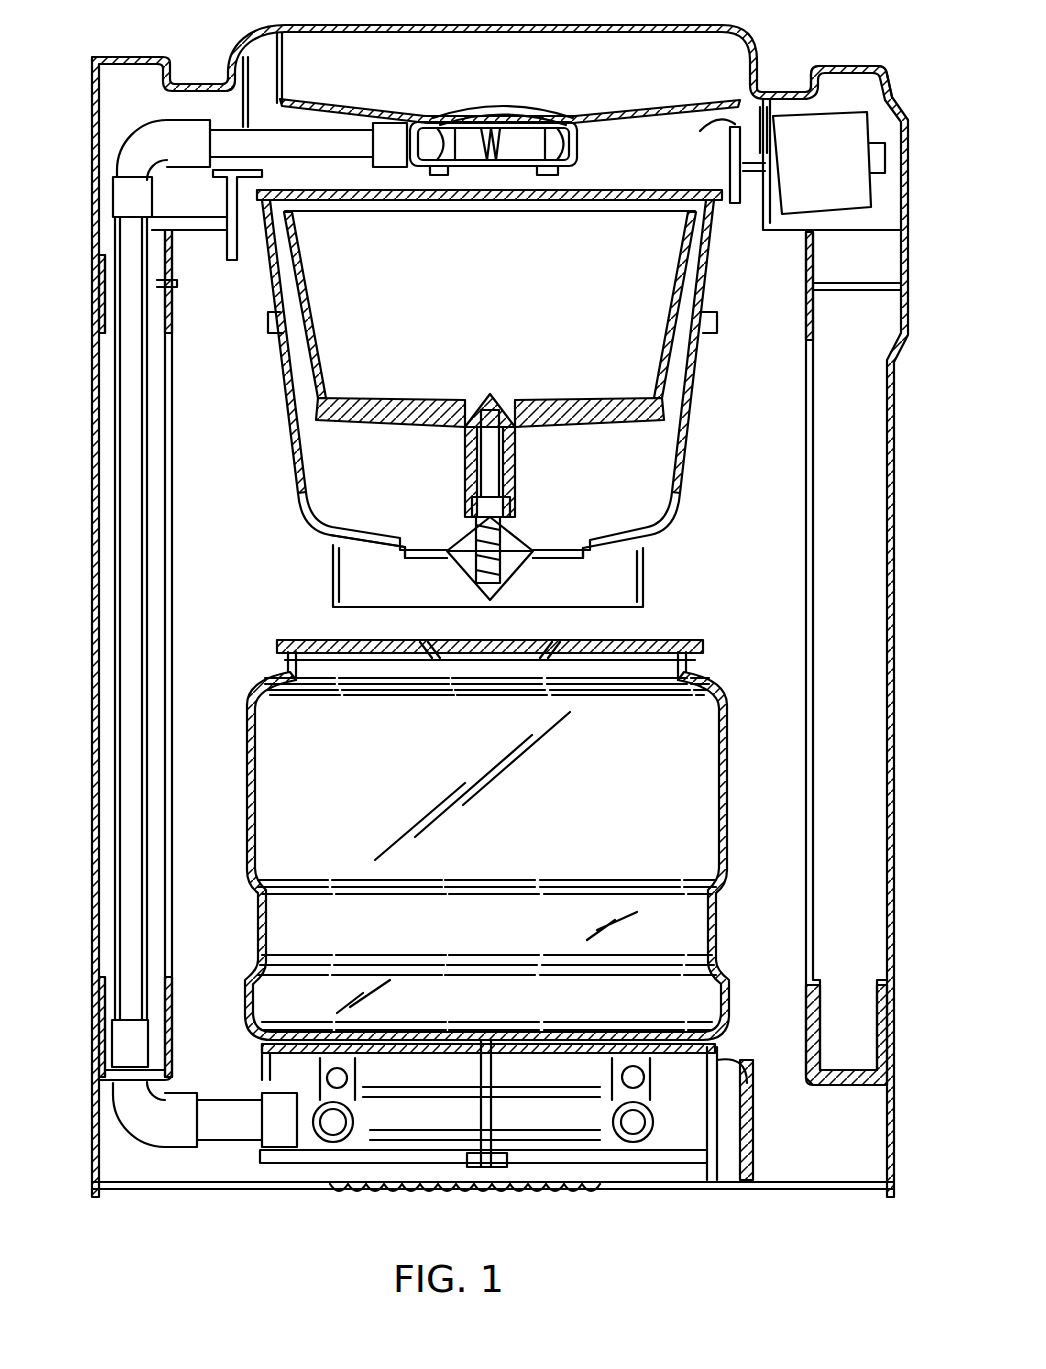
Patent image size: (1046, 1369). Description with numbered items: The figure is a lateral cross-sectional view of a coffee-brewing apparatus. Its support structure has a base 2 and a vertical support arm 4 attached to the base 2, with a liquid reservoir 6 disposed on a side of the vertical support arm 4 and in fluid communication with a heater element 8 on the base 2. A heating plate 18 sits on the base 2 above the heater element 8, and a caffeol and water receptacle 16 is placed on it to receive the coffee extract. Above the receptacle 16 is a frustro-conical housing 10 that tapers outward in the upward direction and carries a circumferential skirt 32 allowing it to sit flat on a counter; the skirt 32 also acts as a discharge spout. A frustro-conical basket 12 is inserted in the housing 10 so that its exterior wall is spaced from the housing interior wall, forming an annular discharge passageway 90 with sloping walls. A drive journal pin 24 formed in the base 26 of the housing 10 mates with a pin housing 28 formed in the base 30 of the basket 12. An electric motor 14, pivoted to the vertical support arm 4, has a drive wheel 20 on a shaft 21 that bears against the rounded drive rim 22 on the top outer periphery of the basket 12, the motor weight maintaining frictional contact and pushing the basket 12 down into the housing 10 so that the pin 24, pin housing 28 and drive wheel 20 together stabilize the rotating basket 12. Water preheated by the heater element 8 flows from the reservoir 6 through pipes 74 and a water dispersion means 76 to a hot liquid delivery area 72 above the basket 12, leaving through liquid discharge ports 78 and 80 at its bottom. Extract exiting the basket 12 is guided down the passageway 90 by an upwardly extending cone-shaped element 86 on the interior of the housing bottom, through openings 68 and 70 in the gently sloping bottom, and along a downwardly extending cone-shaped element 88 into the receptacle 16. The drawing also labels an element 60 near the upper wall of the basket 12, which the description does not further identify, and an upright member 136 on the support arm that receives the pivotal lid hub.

The base 2 is at (203, 1186).
The vertical support arm 4 is at (895, 672).
The liquid reservoir 6 is at (865, 738).
The heater element 8 is at (327, 1143).
The housing 10 is at (295, 462).
The basket 12 is at (386, 360).
The motor 14 is at (815, 130).
The caffeol and water receptacle 16 is at (321, 823).
The heating plate 18 is at (673, 1070).
The drive wheel 20 is at (730, 122).
The shaft 21 is at (735, 120).
The drive rim 22 is at (713, 197).
The drive journal pin 24 is at (488, 465).
The base of the housing 26 is at (582, 535).
The pin housing 28 is at (470, 425).
The base of the basket 30 is at (636, 426).
The circumferential skirt 32 is at (642, 596).
The rim 60 is at (685, 240).
The opening 68 is at (435, 558).
The opening 70 is at (553, 557).
The hot liquid delivery area 72 is at (626, 170).
The pipes 74 is at (130, 708).
The water dispersion means 76 is at (530, 135).
The liquid discharge port 78 is at (441, 128).
The liquid discharge port 80 is at (560, 130).
The cone-shaped element 86 is at (516, 537).
The cone-shaped element 88 is at (515, 570).
The annular discharge passageway 90 is at (353, 482).
The upright member 136 is at (863, 62).